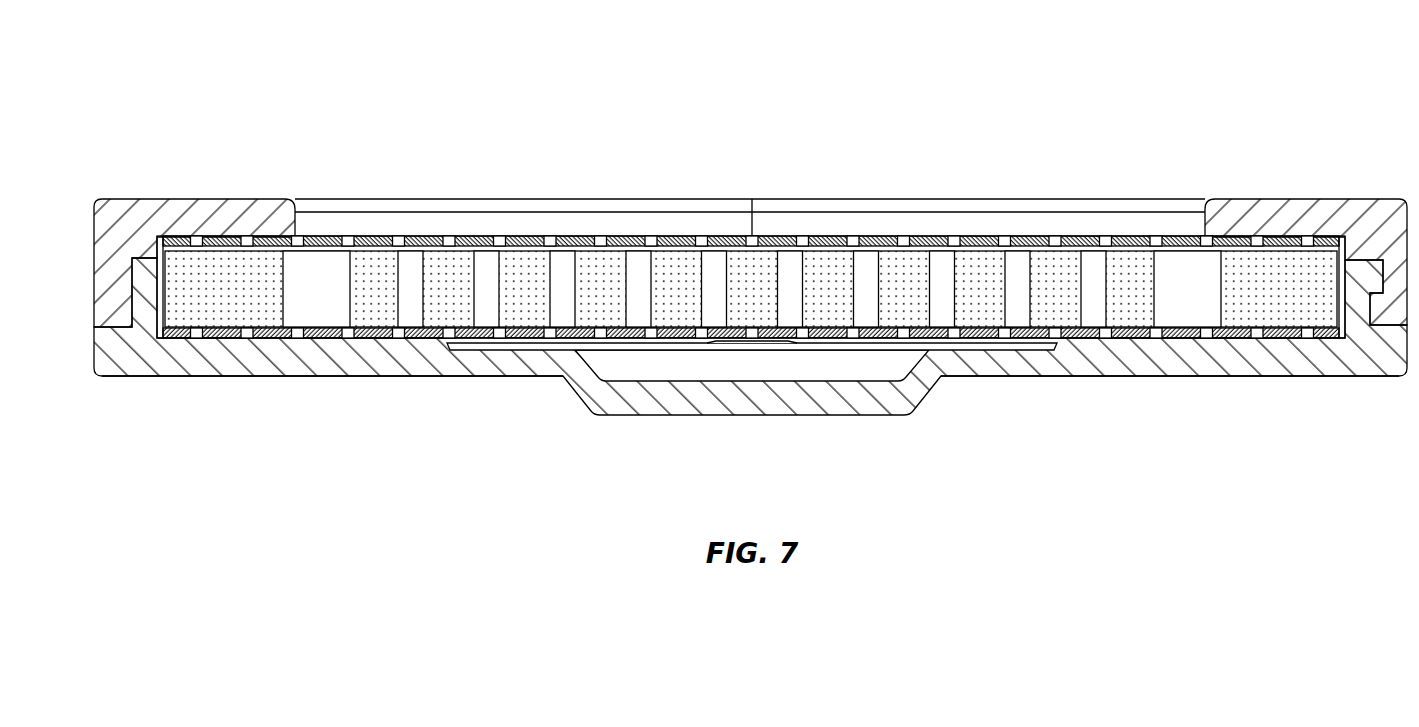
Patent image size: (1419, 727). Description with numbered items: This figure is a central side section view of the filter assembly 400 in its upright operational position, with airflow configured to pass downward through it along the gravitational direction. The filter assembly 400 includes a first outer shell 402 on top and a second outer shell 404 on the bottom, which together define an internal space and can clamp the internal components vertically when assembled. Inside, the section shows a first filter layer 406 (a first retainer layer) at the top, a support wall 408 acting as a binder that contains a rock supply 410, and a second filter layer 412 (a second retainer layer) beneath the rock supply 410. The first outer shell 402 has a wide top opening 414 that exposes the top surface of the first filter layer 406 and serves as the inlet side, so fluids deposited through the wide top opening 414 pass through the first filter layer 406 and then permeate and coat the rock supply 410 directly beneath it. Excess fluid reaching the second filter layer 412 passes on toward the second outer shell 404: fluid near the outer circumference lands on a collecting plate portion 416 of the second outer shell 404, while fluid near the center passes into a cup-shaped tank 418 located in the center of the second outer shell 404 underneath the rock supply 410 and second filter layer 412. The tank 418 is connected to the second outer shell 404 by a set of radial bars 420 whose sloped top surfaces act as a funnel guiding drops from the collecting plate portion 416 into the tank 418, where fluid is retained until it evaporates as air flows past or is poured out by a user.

The filter assembly 400 is at (765, 126).
The first outer shell 402 is at (182, 197).
The second outer shell 404 is at (750, 381).
The first filter layer 406 is at (1177, 237).
The support wall 408 is at (751, 353).
The rock supply 410 is at (340, 289).
The second filter layer 412 is at (1190, 340).
The wide top opening 414 is at (300, 222).
The collecting plate portion 416 is at (188, 363).
The tank 418 is at (625, 400).
The radial bars 420 is at (527, 362).